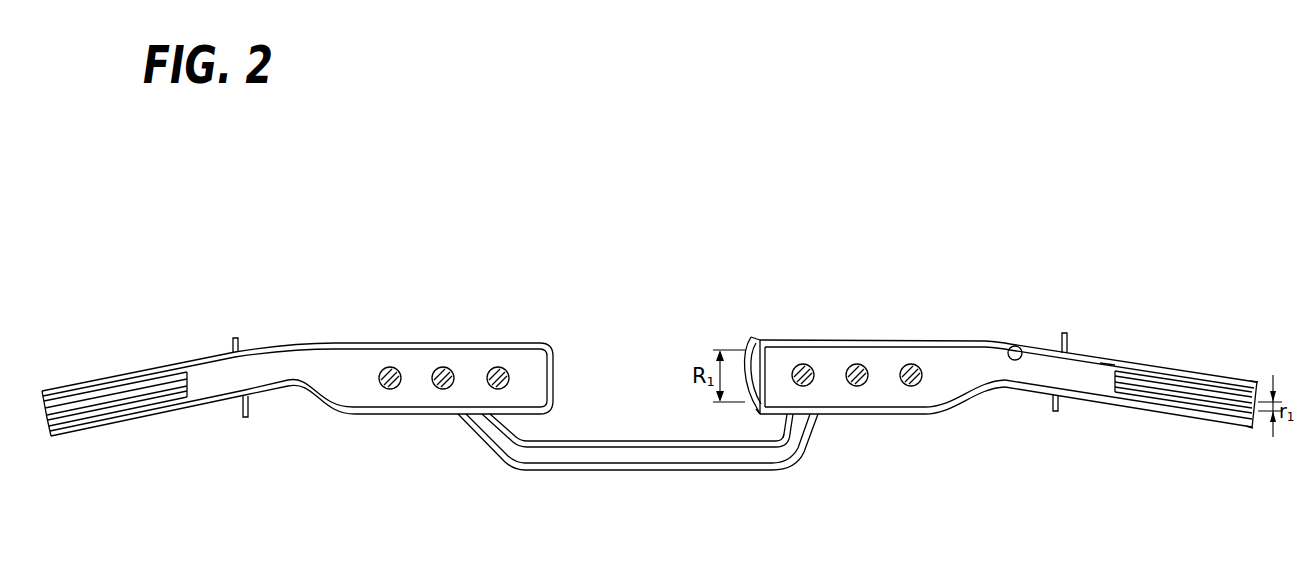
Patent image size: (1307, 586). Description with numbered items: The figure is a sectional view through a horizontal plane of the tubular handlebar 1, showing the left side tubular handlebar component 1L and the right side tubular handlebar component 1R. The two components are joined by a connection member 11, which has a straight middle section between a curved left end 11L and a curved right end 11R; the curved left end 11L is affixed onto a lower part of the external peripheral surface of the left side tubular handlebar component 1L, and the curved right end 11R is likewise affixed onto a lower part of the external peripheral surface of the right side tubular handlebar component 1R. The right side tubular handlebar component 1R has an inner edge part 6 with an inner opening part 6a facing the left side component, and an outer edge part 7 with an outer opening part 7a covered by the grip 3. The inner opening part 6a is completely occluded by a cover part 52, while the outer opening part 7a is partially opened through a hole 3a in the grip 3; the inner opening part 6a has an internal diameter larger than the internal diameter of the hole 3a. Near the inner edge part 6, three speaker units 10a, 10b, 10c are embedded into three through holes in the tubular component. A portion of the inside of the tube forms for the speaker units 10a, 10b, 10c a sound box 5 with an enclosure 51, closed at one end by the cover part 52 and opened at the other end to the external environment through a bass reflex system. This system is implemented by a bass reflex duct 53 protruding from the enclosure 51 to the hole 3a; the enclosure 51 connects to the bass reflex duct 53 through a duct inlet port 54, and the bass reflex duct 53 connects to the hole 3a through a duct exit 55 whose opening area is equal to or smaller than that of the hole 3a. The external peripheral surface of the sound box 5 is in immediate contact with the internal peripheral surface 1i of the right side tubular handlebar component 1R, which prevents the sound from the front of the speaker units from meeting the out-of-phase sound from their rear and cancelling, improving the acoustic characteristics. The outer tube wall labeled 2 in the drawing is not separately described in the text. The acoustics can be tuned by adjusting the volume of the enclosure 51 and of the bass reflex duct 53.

The tubular handlebar 1 is at (831, 204).
The left side tubular handlebar component 1L is at (345, 266).
The right side tubular handlebar component 1R is at (990, 220).
The internal peripheral surface 1i is at (1018, 347).
The outer pipe 2 is at (1083, 425).
The grip 3 is at (1134, 358).
The hole 3a is at (1253, 429).
The sound box 5 is at (872, 340).
The enclosure 51 is at (889, 345).
The cover part 52 is at (748, 358).
The bass reflex duct 53 is at (1180, 372).
The duct inlet port 54 is at (1106, 360).
The duct exit 55 is at (1222, 378).
The inner edge part 6 is at (783, 438).
The inner opening part 6a is at (758, 413).
The outer edge part 7 is at (1244, 395).
The outer opening part 7a is at (1257, 380).
The speaker unit 10a is at (802, 372).
The speaker unit 10b is at (855, 370).
The speaker unit 10c is at (914, 368).
The connection member 11 is at (633, 470).
The curved left end 11L is at (470, 447).
The curved right end 11R is at (836, 458).